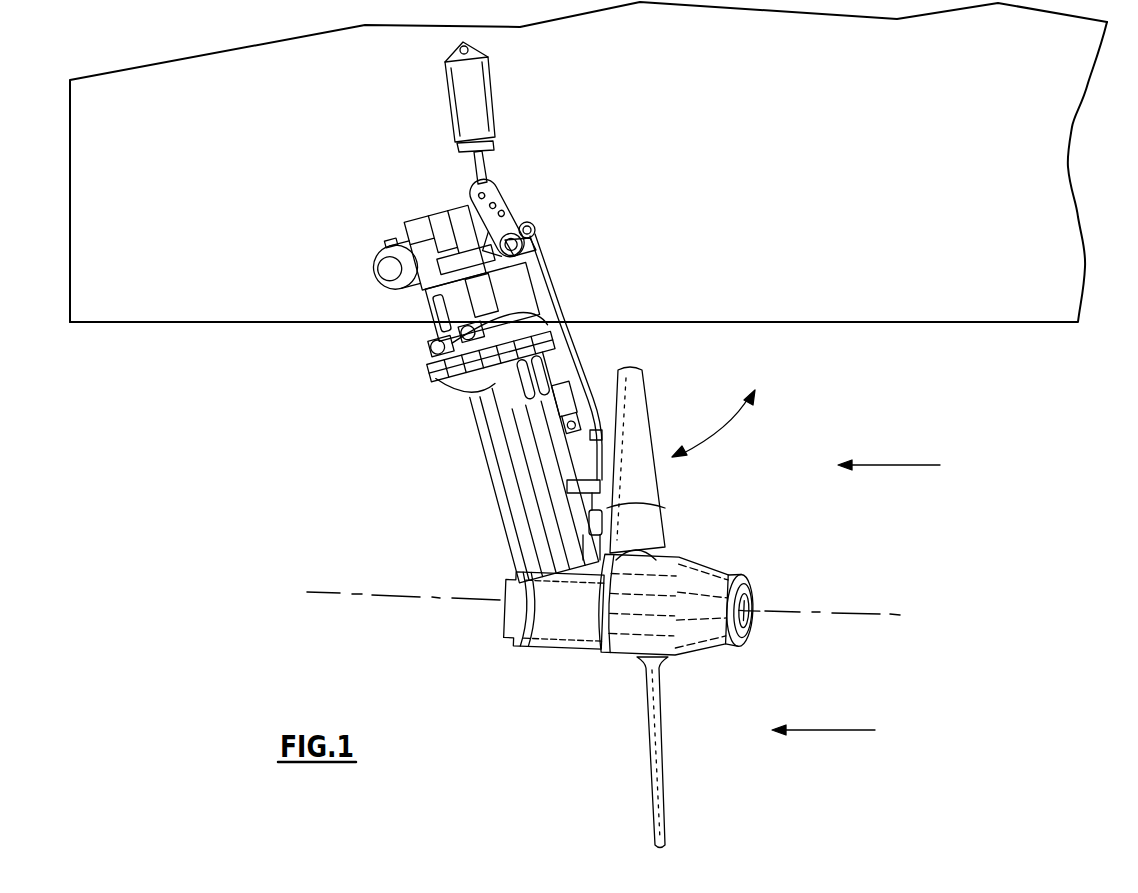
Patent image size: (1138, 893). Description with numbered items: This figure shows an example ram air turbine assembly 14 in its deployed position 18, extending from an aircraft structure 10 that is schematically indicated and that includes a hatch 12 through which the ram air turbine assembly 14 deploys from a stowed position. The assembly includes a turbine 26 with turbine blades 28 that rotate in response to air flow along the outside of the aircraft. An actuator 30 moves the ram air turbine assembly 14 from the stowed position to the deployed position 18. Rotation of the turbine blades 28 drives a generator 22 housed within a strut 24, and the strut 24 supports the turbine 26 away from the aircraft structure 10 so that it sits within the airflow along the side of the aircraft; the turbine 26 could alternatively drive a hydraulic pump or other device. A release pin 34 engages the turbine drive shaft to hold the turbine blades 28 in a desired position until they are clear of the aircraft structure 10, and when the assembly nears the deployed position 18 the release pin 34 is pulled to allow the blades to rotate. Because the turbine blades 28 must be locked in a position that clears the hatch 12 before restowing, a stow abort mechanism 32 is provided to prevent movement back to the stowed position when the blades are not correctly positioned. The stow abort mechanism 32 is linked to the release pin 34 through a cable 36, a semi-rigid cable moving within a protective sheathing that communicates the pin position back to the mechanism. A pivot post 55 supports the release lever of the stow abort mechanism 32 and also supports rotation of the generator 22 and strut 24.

The aircraft structure 10 is at (1010, 322).
The hatch 12 is at (170, 290).
The ram air turbine assembly 14 is at (620, 705).
The deployed position 18 is at (768, 472).
The generator 22 is at (498, 286).
The strut 24 is at (366, 433).
The turbine 26 is at (775, 585).
The turbine blades 28 is at (660, 782).
The actuator 30 is at (476, 102).
The stow abort mechanism 32 is at (524, 180).
The release pin 34 is at (660, 503).
The cable 36 is at (565, 333).
The pivot post 55 is at (382, 268).